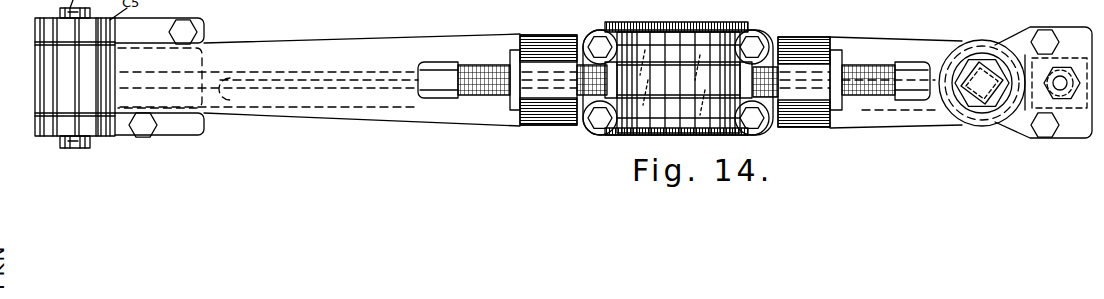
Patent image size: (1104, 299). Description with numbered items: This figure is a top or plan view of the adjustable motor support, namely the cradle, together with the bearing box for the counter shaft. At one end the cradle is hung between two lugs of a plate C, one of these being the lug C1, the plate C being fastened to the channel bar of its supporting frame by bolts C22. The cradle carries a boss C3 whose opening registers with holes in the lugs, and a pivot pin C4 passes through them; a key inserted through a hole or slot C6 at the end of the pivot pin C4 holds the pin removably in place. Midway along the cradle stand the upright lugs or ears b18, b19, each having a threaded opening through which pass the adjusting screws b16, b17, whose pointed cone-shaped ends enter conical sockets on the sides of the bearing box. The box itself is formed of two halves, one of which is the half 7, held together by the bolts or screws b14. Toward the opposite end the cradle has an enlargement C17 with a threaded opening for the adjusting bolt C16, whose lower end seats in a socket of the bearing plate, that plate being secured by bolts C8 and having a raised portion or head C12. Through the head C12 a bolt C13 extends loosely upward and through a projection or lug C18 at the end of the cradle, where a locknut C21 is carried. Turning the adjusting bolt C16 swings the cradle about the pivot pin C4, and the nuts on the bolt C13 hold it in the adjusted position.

The boss C3 is at (38, 70).
The pivot pin C4 is at (60, 145).
The hole or slot C6 is at (70, 147).
The lug C1 is at (100, 138).
The plate C is at (165, 137).
The bolts C22 is at (187, 32).
The adjusting screw b17 is at (467, 64).
The upright lug b19 is at (545, 42).
The bearing box half 7 is at (648, 30).
The bolts or screws b14 is at (597, 44).
The upright lug b18 is at (800, 45).
The adjusting screw b16 is at (866, 64).
The enlargement C17 is at (956, 58).
The adjusting bolt C16 is at (983, 70).
The bolts C8 is at (1047, 30).
The raised portion or head C12 is at (1062, 92).
The bolt C13 is at (1074, 84).
The locknut C21 is at (1082, 98).
The projection or lug C18 is at (1092, 135).